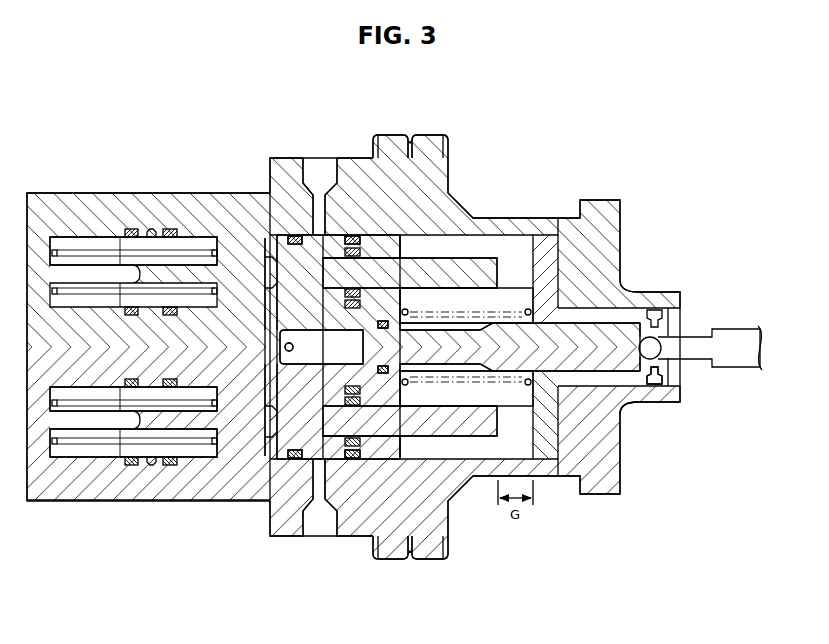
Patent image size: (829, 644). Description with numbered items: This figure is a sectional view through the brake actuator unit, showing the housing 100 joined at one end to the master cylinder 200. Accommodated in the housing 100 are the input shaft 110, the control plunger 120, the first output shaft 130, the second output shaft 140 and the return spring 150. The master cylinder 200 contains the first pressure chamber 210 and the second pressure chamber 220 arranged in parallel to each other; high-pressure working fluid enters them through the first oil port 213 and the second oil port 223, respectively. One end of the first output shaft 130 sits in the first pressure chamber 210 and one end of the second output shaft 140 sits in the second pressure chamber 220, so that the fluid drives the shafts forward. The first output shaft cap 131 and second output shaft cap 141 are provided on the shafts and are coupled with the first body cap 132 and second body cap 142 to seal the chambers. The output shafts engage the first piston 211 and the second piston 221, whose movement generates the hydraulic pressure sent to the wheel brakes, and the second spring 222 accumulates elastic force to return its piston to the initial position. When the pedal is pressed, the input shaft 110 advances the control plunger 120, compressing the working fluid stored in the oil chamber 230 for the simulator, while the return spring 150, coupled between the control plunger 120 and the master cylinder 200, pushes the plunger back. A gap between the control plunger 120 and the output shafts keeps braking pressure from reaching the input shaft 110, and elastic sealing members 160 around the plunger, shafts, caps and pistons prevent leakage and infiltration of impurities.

The housing 100 is at (614, 492).
The input shaft 110 is at (727, 365).
The control plunger 120 is at (641, 404).
The first output shaft 130 is at (483, 262).
The first output shaft cap 131 is at (376, 244).
The first body cap 132 is at (394, 240).
The second output shaft 140 is at (490, 440).
The second output shaft cap 141 is at (386, 472).
The second body cap 142 is at (410, 470).
The return spring 150 is at (513, 306).
The elastic sealing members 160 is at (296, 236).
The master cylinder 200 is at (155, 507).
The first pressure chamber 210 is at (338, 230).
The first piston 211 is at (234, 250).
The first oil port 213 is at (320, 175).
The second pressure chamber 220 is at (327, 452).
The second piston 221 is at (85, 247).
The second spring 222 is at (85, 447).
The second oil port 223 is at (320, 530).
The oil chamber 230 is at (312, 353).